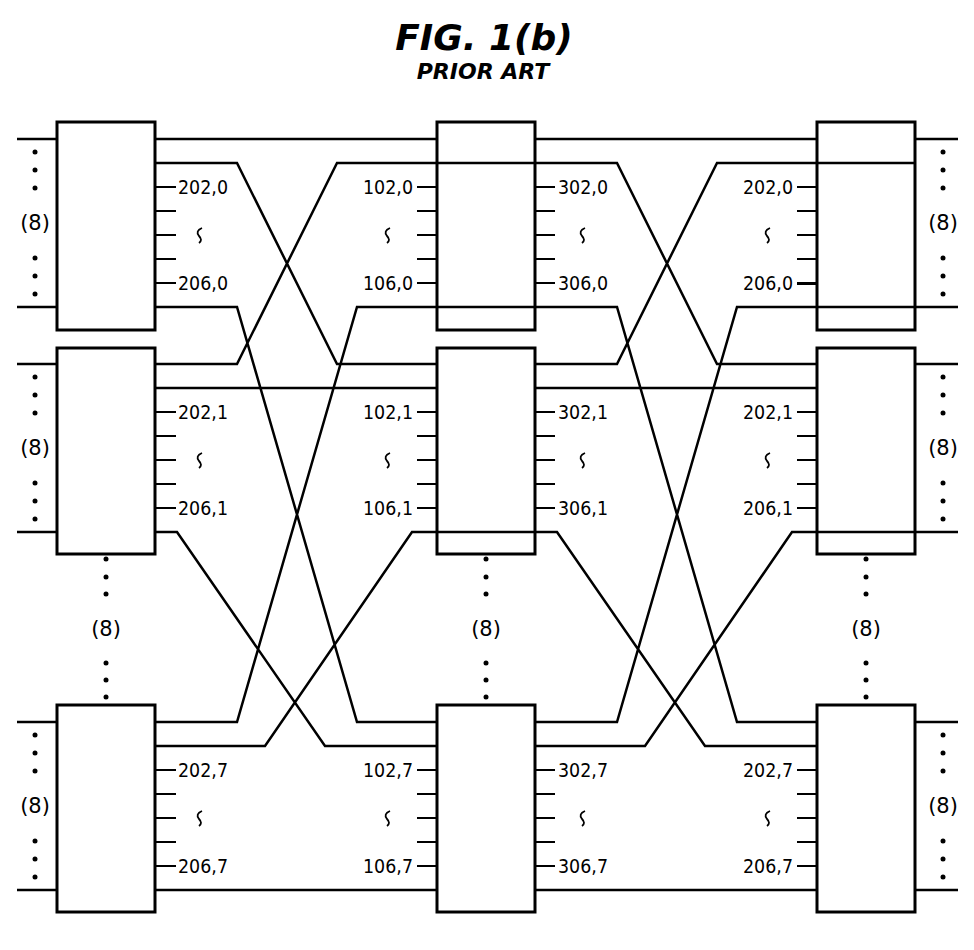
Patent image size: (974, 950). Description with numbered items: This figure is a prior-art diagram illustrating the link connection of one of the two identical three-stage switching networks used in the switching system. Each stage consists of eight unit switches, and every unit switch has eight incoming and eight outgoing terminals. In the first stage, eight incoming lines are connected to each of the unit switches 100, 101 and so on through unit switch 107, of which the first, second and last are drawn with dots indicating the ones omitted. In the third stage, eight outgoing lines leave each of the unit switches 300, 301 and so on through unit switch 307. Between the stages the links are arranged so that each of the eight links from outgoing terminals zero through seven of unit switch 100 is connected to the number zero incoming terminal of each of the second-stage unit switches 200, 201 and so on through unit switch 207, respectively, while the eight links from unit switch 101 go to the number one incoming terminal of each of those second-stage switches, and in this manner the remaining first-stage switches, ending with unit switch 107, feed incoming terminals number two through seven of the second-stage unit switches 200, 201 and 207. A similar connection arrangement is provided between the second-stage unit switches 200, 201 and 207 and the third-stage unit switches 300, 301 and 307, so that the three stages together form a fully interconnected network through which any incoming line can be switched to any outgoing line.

The unit switch 100 is at (85, 229).
The unit switch 101 is at (85, 454).
The unit switch 107 is at (85, 812).
The unit switch 200 is at (469, 229).
The unit switch 201 is at (469, 454).
The unit switch 207 is at (469, 812).
The unit switch 300 is at (860, 229).
The unit switch 301 is at (860, 454).
The unit switch 307 is at (860, 812).